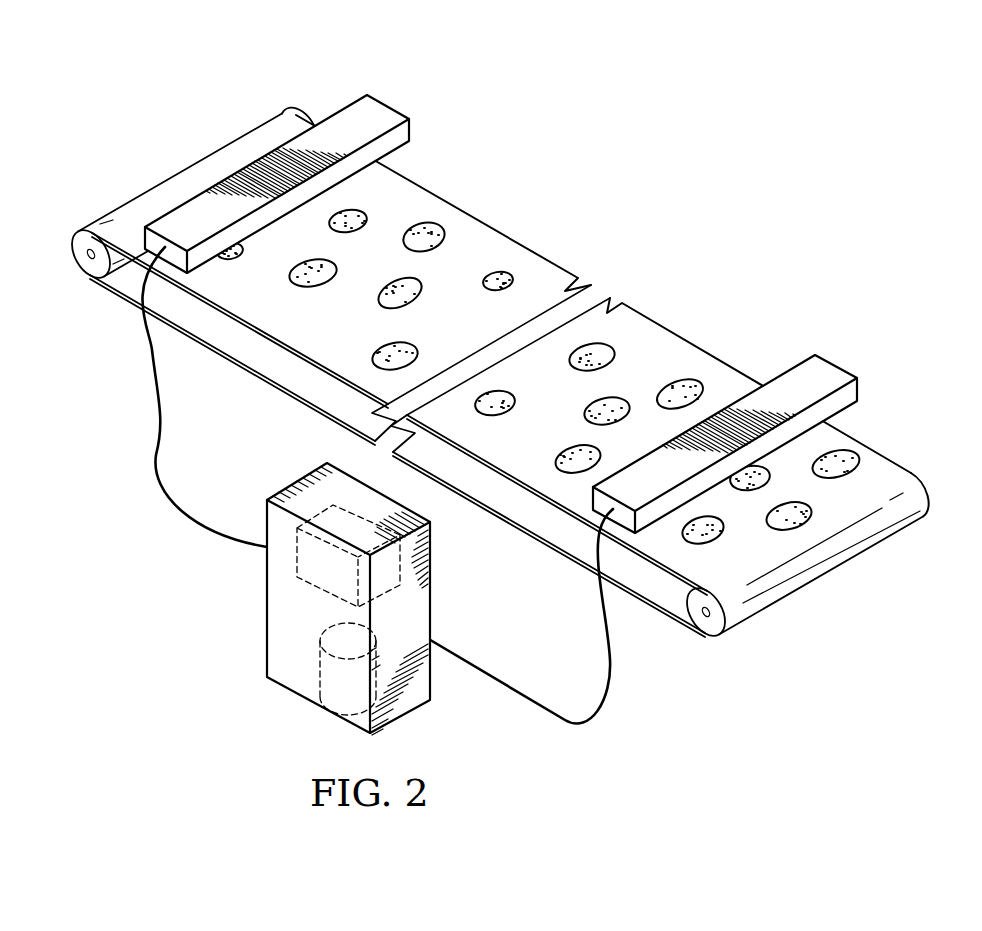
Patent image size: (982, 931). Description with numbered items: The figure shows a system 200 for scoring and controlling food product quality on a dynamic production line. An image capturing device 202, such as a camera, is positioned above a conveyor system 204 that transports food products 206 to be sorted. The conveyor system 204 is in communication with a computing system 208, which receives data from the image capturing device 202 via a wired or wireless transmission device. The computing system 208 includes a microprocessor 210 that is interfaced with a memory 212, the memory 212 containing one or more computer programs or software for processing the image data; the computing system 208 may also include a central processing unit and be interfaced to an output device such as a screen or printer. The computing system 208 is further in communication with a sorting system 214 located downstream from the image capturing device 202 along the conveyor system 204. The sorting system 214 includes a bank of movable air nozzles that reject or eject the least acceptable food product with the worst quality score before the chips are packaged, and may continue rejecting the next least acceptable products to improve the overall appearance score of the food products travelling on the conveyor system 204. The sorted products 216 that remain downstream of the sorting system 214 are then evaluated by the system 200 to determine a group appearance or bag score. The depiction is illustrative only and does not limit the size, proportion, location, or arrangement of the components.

The system 200 is at (502, 413).
The image capturing device 202 is at (387, 106).
The conveyor system 204 is at (793, 598).
The food products 206 is at (427, 223).
The computing system 208 is at (377, 505).
The microprocessor 210 is at (297, 551).
The memory 212 is at (327, 703).
The sorting system 214 is at (833, 366).
The sorted products 216 is at (858, 452).